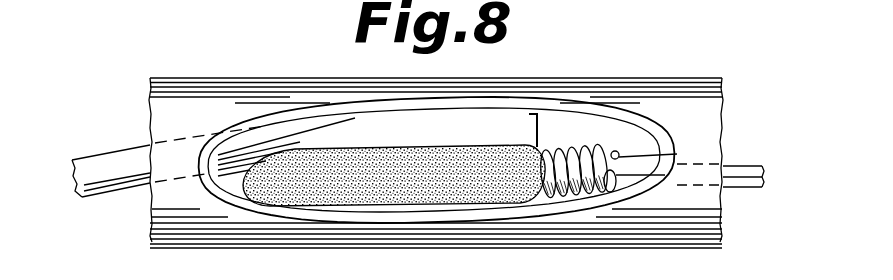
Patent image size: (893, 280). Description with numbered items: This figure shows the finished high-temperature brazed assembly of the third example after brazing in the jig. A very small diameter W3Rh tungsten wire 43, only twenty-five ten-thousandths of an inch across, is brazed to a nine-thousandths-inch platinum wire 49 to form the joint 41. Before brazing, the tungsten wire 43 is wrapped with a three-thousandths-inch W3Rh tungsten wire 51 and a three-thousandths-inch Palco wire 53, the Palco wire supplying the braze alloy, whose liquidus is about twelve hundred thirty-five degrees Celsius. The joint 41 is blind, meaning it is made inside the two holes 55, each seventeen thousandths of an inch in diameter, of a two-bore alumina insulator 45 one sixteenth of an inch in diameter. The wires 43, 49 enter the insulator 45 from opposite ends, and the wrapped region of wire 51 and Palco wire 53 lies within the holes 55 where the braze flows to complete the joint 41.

The joint 41 is at (282, 202).
The tungsten wire 43 is at (782, 131).
The insulator 45 is at (257, 96).
The platinum wire 49 is at (333, 125).
The tungsten wire 51 is at (594, 194).
The Palco wire 53 is at (591, 146).
The holes 55 is at (520, 117).